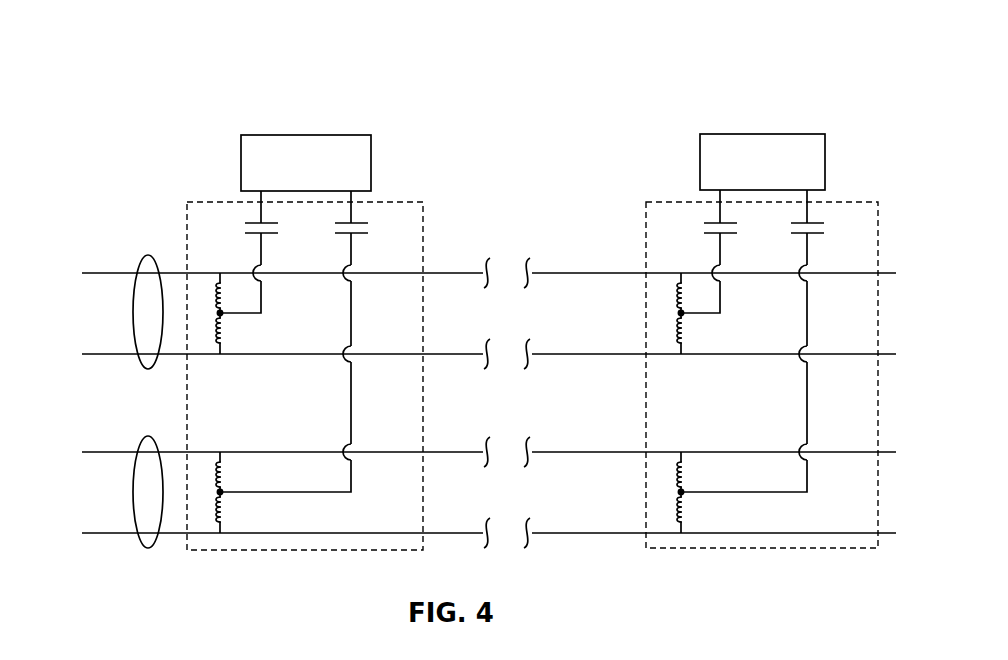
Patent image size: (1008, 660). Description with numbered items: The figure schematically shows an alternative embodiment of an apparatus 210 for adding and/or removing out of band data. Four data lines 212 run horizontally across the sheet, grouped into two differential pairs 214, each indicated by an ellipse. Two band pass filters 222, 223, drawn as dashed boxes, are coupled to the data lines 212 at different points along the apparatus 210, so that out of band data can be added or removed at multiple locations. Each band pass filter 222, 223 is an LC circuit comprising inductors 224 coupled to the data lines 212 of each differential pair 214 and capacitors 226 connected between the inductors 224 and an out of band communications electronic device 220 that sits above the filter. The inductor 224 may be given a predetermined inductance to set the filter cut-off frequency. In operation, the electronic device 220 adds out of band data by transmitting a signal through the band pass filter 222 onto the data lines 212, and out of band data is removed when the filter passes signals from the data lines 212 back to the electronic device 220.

The apparatus 210 is at (160, 90).
The data lines 212 is at (118, 272).
The differential pair 214 is at (150, 369).
The out of band communications electronic device 220 is at (312, 134).
The band pass filter 222 is at (425, 221).
The band pass filter 223 is at (644, 221).
The inductor 224 is at (222, 333).
The capacitor 226 is at (245, 230).